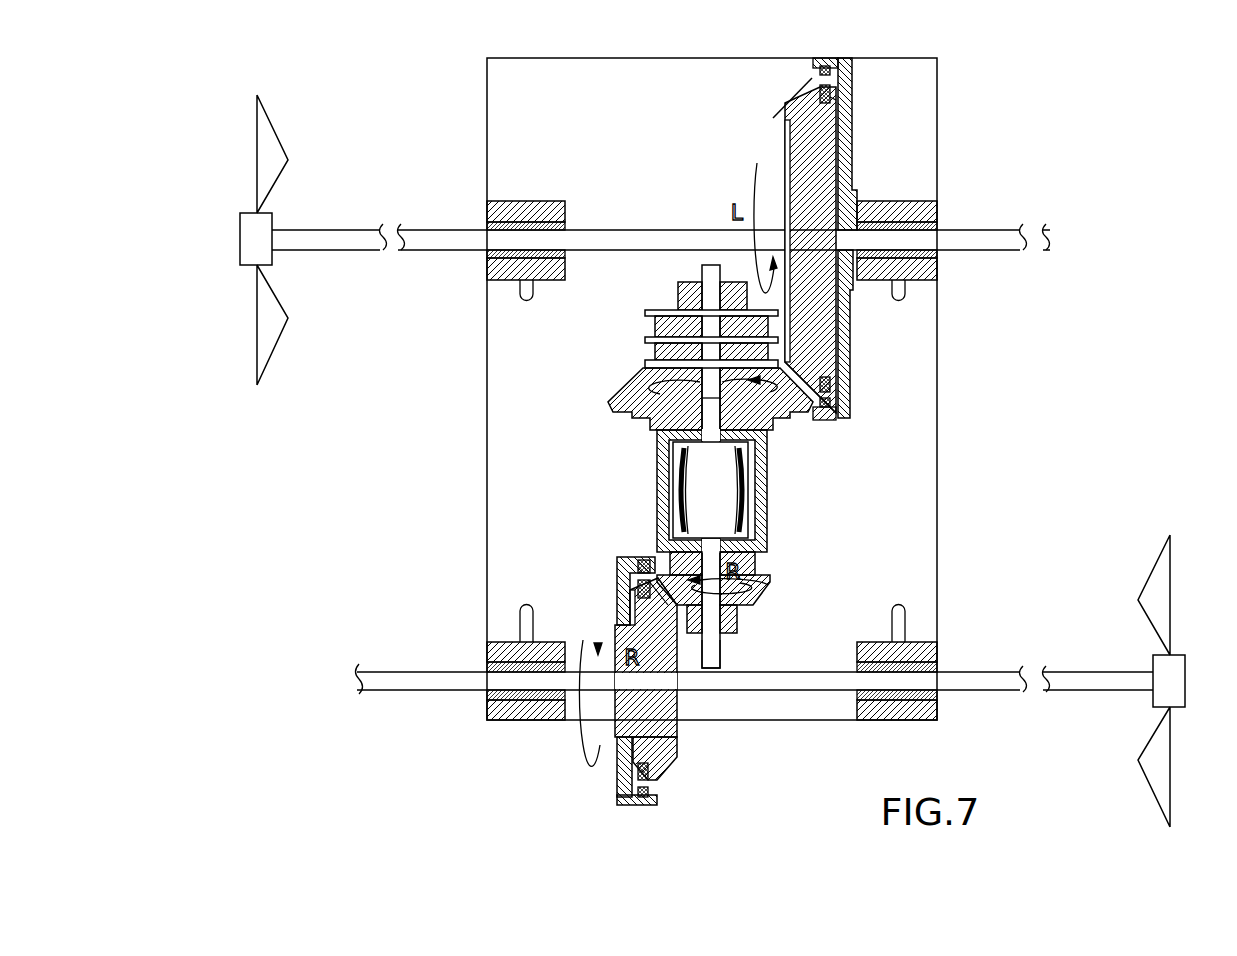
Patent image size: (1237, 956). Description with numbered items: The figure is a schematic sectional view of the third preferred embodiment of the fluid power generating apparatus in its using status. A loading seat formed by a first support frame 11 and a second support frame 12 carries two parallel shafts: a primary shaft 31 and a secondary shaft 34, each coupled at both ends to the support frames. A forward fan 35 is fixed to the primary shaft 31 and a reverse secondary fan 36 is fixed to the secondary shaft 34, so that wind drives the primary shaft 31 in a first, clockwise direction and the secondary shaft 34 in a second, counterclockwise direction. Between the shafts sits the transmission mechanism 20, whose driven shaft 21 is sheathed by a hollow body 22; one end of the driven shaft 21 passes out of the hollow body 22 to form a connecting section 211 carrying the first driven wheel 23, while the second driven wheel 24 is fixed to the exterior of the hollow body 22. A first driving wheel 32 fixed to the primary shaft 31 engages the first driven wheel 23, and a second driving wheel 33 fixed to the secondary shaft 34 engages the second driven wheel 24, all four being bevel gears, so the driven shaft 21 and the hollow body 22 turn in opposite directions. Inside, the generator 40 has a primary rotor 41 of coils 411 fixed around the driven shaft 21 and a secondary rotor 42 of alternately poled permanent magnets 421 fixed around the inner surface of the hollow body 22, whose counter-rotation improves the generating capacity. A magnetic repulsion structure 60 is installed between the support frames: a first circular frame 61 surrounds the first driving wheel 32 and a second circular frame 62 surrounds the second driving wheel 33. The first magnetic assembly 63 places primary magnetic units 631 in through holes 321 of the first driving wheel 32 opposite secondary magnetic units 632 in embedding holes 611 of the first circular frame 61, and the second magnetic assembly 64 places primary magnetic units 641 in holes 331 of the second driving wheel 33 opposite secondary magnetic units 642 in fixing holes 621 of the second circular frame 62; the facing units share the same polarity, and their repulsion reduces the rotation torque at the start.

The first support frame 11 is at (510, 215).
The second support frame 12 is at (912, 216).
The transmission mechanism 20 is at (618, 475).
The driven shaft 21 is at (710, 268).
The connecting section 211 is at (715, 650).
The hollow body 22 is at (657, 467).
The first driven wheel 23 is at (757, 595).
The second driven wheel 24 is at (628, 383).
The primary shaft 31 is at (805, 690).
The first driving wheel 32 is at (668, 700).
The through holes 321 is at (648, 760).
The second driving wheel 33 is at (790, 148).
The holes 331 is at (838, 360).
The secondary shaft 34 is at (600, 240).
The fan 35 is at (1158, 597).
The secondary fan 36 is at (262, 160).
The generator 40 is at (704, 515).
The primary rotor 41 is at (793, 517).
The coils 411 is at (767, 522).
The secondary rotor 42 is at (622, 490).
The permanent magnets 421 is at (681, 492).
The magnetic repulsion structure 60 is at (870, 163).
The first circular frame 61 is at (615, 615).
The embedding holes 611 is at (648, 802).
The second circular frame 62 is at (845, 135).
The fixing holes 621 is at (828, 420).
The first magnetic assembly 63 is at (603, 789).
The primary magnetic units 631 is at (618, 762).
The secondary magnetic units 632 is at (618, 798).
The second magnetic assembly 64 is at (924, 458).
The primary magnetic units 641 is at (832, 388).
The secondary magnetic units 642 is at (848, 420).